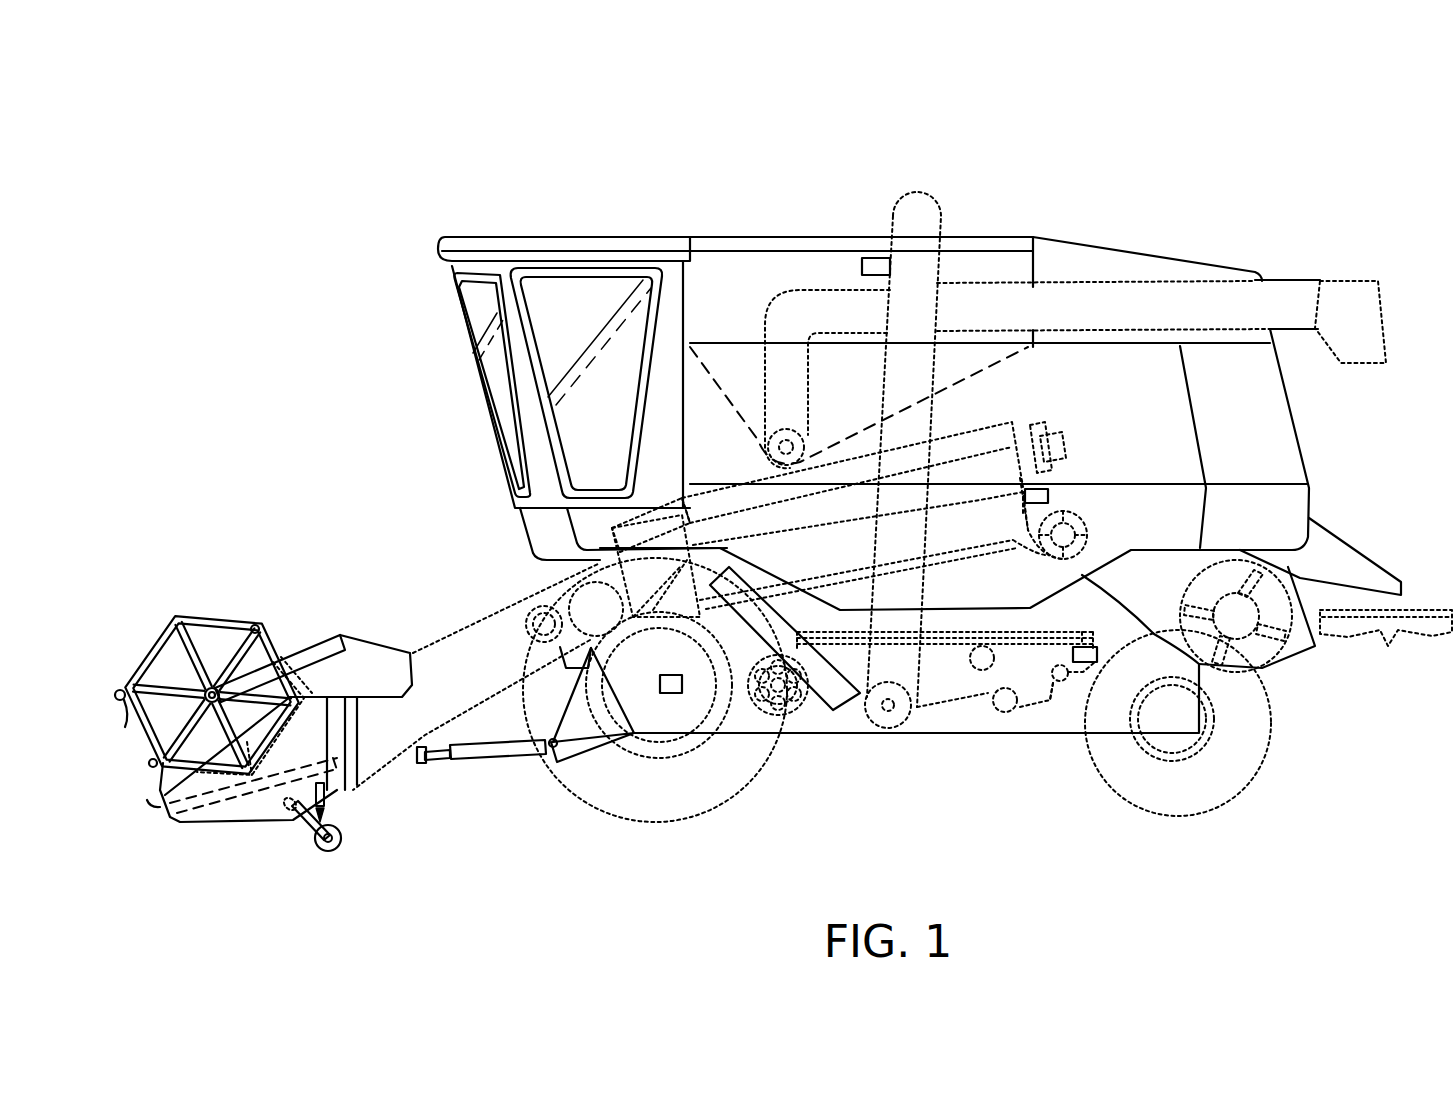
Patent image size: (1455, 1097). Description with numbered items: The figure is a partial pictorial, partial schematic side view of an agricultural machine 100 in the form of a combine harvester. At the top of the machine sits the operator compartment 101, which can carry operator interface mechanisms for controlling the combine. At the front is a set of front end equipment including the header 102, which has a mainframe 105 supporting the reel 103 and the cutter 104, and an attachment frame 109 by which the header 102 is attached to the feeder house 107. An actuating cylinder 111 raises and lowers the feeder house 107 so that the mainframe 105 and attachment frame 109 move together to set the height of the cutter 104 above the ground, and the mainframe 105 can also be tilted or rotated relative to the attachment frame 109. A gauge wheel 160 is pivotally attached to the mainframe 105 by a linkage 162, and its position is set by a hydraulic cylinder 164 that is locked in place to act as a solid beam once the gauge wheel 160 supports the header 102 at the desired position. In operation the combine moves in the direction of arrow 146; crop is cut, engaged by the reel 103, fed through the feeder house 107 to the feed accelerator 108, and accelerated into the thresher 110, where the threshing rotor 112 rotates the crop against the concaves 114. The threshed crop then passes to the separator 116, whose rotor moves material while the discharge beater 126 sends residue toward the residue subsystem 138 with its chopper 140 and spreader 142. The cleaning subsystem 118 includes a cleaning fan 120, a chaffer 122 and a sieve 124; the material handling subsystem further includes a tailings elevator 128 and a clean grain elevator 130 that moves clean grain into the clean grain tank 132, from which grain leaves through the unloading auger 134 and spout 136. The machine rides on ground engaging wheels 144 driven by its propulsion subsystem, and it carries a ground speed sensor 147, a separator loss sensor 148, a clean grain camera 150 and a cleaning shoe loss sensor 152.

The agricultural machine 100 is at (1306, 108).
The operator compartment 101 is at (566, 238).
The header 102 is at (225, 609).
The reel 103 is at (177, 660).
The cutter 104 is at (139, 812).
The mainframe 105 is at (200, 824).
The feeder house 107 is at (452, 623).
The feed accelerator 108 is at (577, 587).
The attachment frame 109 is at (335, 800).
The thresher 110 is at (963, 423).
The actuating cylinder 111 is at (507, 757).
The threshing rotor 112 is at (1012, 417).
The concaves 114 is at (1023, 513).
The separator 116 is at (950, 556).
The cleaning subsystem 118 is at (1092, 684).
The cleaning fan 120 is at (740, 707).
The chaffer 122 is at (1082, 640).
The sieve 124 is at (1003, 647).
The discharge beater 126 is at (1088, 523).
The tailings elevator 128 is at (830, 715).
The clean grain elevator 130 is at (915, 662).
The clean grain tank 132 is at (722, 333).
The unloading auger 134 is at (807, 447).
The spout 136 is at (1350, 281).
The residue subsystem 138 is at (1368, 540).
The chopper 140 is at (1258, 675).
The spreader 142 is at (1345, 636).
The ground engaging wheels 144 is at (567, 785).
The arrow 146 is at (400, 452).
The ground speed sensor 147 is at (668, 695).
The separator loss sensor 148 is at (1040, 490).
The clean grain camera 150 is at (867, 256).
The cleaning shoe loss sensor 152 is at (1097, 655).
The gauge wheel 160 is at (345, 845).
The linkage 162 is at (320, 822).
The hydraulic cylinder 164 is at (335, 790).